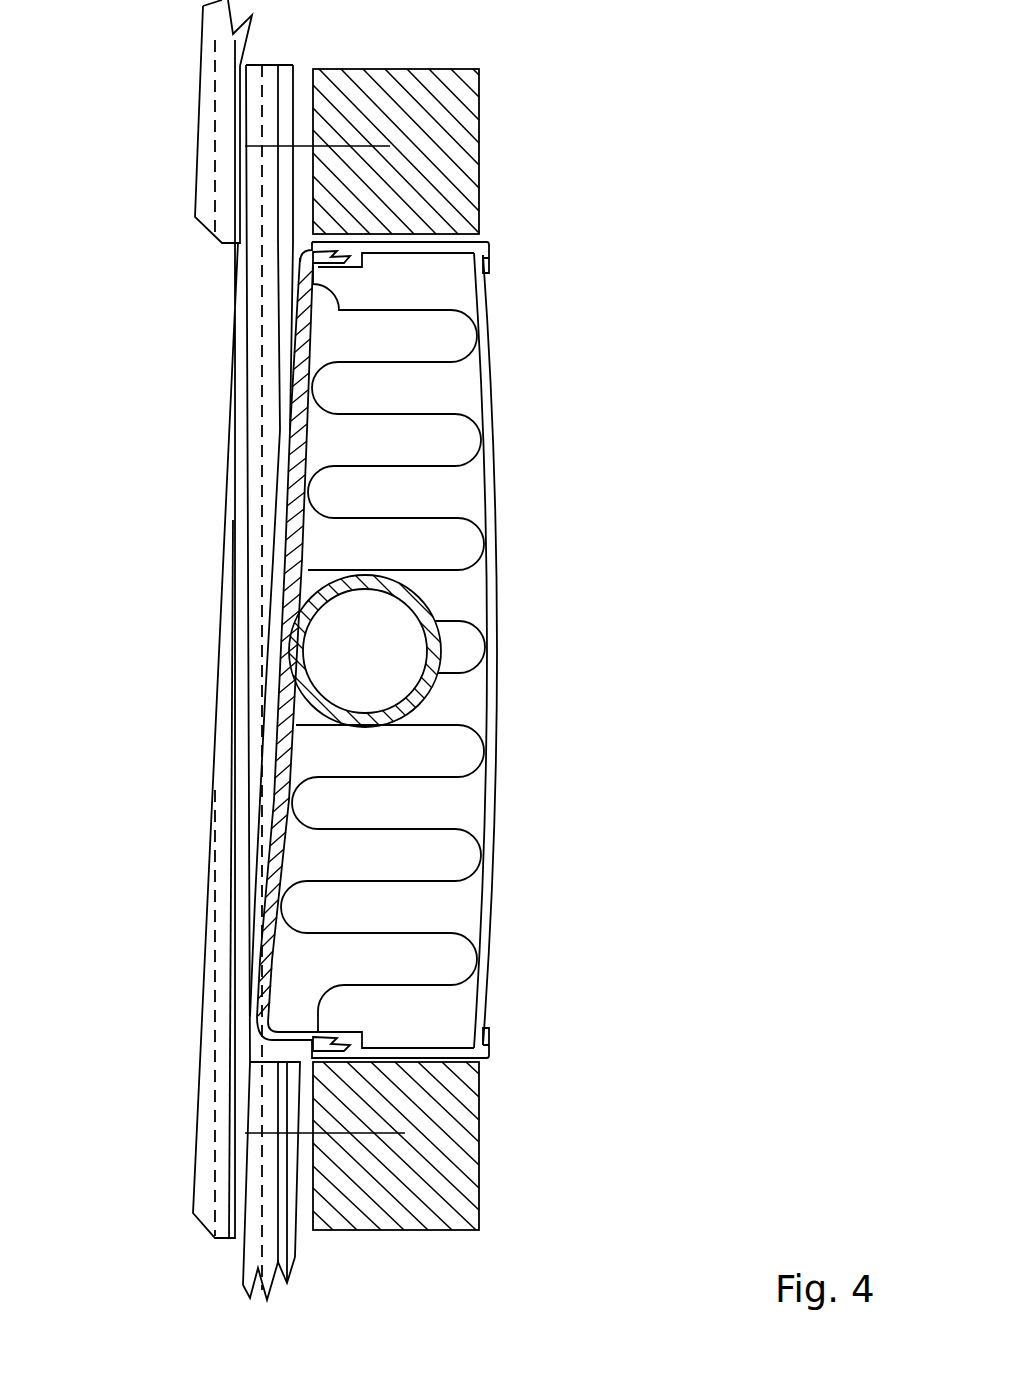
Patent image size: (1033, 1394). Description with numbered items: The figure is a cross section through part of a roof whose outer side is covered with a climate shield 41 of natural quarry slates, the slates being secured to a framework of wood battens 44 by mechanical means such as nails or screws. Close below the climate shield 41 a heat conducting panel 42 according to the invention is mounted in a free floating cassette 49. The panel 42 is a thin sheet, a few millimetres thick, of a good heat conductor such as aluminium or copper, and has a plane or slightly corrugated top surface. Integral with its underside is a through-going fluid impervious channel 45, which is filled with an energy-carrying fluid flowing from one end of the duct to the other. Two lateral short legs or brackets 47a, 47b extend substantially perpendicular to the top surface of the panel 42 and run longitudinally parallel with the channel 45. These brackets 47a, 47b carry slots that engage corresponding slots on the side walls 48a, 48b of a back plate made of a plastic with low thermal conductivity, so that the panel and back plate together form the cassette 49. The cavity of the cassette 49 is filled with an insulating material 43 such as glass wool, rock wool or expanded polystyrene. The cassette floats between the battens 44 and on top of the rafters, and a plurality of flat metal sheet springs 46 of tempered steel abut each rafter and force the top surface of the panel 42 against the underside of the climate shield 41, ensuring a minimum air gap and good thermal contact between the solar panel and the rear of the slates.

The climate shield 41 is at (212, 130).
The heat conducting panel 42 is at (303, 590).
The insulating material 43 is at (455, 868).
The battens 44 is at (473, 143).
The fluid impervious channel 45 is at (423, 617).
The flat metal sheet springs 46 is at (500, 745).
The bracket 47a is at (318, 1038).
The bracket 47b is at (322, 265).
The side wall 48a is at (430, 1042).
The side wall 48b is at (428, 256).
The cassette 49 is at (558, 450).